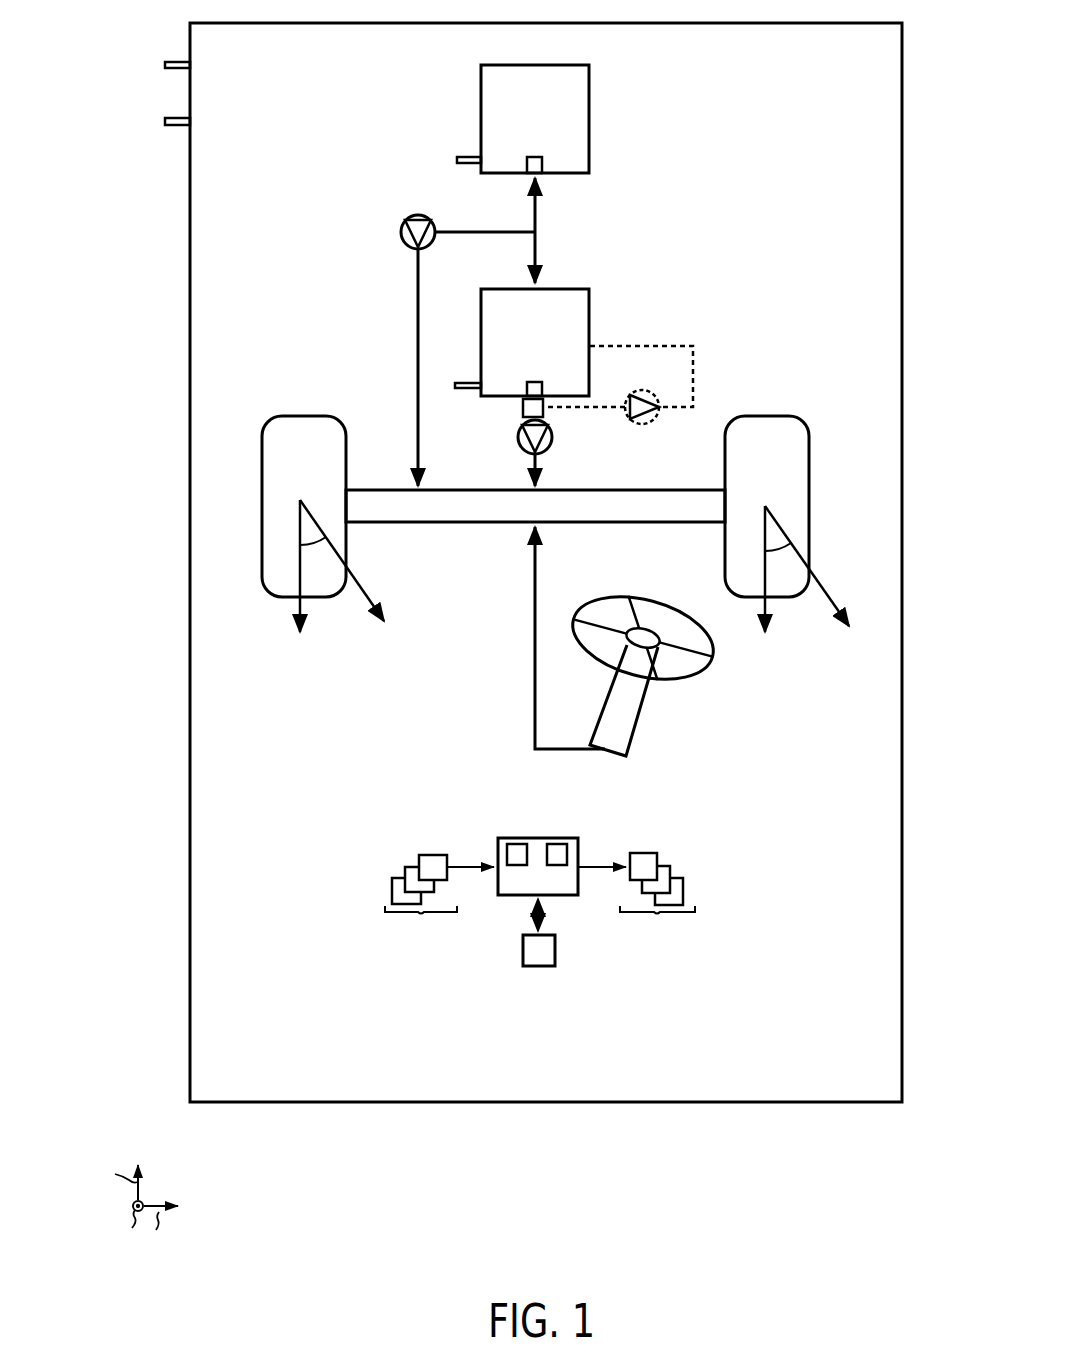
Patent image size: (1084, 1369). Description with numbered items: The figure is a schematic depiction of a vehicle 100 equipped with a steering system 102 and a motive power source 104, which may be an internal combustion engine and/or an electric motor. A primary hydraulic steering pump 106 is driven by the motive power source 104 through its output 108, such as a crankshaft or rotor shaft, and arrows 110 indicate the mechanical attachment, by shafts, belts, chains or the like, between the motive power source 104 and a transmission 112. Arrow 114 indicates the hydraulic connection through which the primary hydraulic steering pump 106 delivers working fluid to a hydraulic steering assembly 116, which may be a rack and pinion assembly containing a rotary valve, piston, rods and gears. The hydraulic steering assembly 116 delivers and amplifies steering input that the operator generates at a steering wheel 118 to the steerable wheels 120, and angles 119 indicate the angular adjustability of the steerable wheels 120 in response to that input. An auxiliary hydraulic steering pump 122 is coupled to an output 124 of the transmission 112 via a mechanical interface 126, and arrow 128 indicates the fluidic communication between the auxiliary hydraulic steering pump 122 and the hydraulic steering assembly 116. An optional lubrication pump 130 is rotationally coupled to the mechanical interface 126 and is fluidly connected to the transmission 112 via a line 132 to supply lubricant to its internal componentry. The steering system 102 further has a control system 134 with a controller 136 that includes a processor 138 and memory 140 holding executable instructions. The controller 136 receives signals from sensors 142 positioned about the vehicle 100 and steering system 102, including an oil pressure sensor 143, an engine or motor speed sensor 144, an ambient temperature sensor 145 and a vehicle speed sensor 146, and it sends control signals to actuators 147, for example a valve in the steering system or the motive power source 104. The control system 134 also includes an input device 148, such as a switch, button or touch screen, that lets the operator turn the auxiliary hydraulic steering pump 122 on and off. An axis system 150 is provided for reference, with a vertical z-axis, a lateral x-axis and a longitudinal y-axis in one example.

The vehicle 100 is at (190, 23).
The steering system 102 is at (273, 168).
The motive power source 104 is at (589, 100).
The primary hydraulic steering pump 106 is at (401, 232).
The output 108 is at (542, 166).
The arrows 110 is at (536, 210).
The transmission 112 is at (590, 323).
The arrow 114 is at (416, 308).
The hydraulic steering assembly 116 is at (662, 490).
The steering wheel 118 is at (708, 688).
The angles 119 is at (318, 550).
The steerable wheels 120 is at (262, 452).
The auxiliary hydraulic steering pump 122 is at (552, 436).
The output 124 is at (543, 388).
The mechanical interface 126 is at (523, 412).
The arrow 128 is at (540, 469).
The lubrication pump 130 is at (640, 390).
The line 132 is at (695, 375).
The control system 134 is at (705, 822).
The controller 136 is at (505, 838).
The processor 138 is at (507, 852).
The memory 140 is at (567, 852).
The sensors 142 is at (439, 903).
The oil pressure sensor 143 is at (455, 383).
The engine or motor speed sensor 144 is at (461, 157).
The ambient temperature sensor 145 is at (170, 62).
The vehicle speed sensor 146 is at (170, 118).
The actuators 147 is at (636, 902).
The input device 148 is at (538, 966).
The axis system 150 is at (152, 1184).